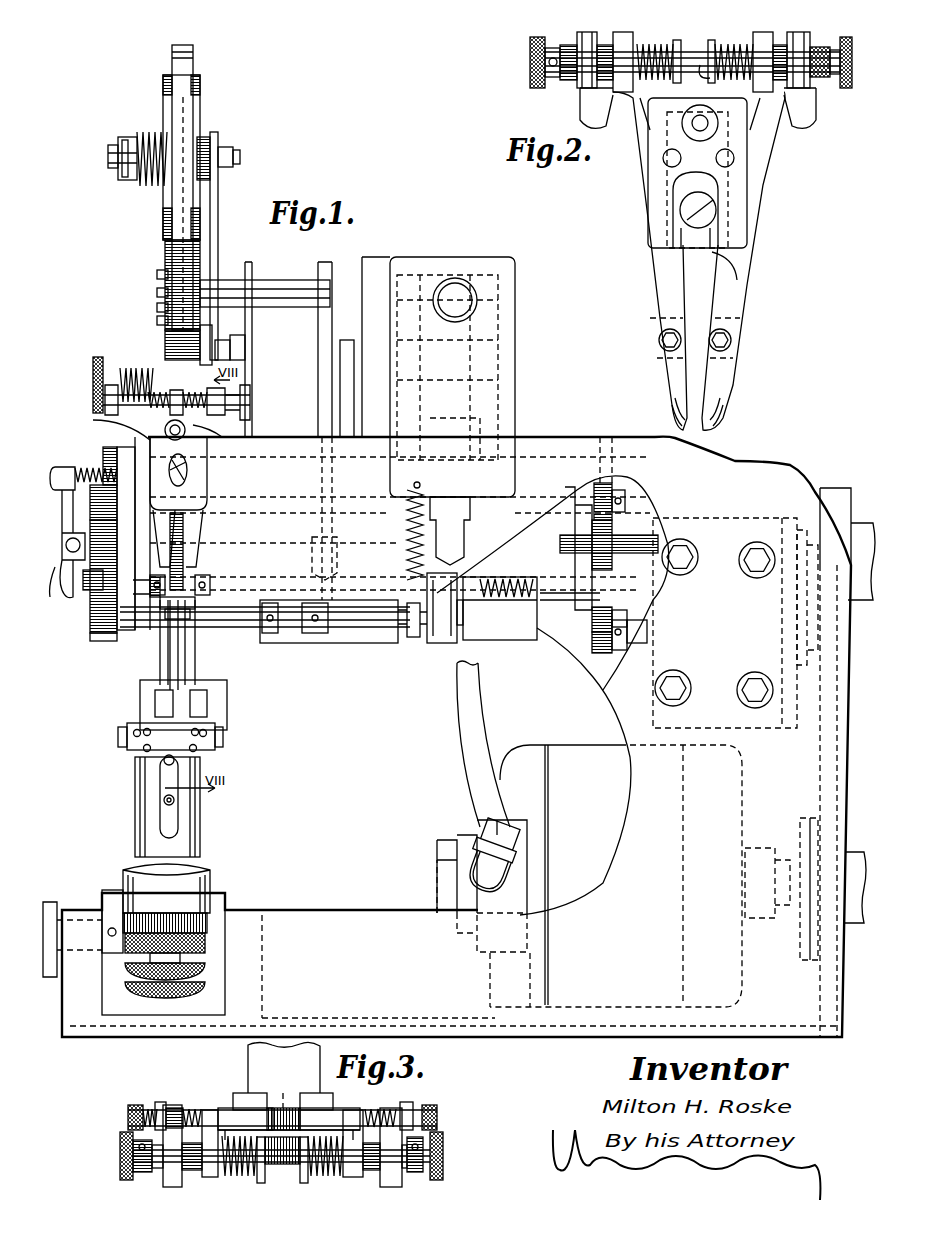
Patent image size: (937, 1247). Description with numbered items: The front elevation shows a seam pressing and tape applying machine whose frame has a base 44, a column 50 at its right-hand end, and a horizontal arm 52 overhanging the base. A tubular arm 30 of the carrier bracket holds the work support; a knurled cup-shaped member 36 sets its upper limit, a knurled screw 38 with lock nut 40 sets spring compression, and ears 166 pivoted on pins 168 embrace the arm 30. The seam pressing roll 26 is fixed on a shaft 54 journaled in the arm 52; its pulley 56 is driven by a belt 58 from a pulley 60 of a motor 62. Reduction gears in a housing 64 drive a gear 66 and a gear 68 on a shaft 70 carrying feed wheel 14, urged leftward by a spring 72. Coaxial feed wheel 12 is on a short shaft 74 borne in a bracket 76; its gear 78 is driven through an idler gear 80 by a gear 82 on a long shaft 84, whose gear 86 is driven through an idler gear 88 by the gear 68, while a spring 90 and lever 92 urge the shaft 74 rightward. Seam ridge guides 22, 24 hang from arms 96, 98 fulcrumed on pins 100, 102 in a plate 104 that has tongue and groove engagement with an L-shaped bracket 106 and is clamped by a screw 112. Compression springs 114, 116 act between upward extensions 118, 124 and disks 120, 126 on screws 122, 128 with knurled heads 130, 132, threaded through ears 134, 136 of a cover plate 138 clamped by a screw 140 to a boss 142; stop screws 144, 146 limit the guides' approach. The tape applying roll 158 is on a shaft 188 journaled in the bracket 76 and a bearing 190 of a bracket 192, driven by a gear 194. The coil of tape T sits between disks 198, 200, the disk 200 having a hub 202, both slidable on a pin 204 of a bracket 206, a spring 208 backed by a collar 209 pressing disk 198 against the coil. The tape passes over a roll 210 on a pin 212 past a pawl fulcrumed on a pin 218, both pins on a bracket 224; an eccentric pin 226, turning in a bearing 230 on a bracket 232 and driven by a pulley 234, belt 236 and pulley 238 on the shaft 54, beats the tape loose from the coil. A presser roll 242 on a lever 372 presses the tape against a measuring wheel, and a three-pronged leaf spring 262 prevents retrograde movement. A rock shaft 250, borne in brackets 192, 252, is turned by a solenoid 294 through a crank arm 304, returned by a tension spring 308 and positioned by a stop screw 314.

In FIG. 1, the feed wheel 12 is at (162, 610).
In FIG. 1, the feed wheel 14 is at (195, 568).
In FIG. 2, the seam ridge guide 22 is at (665, 372).
In FIG. 2, the seam ridge guide 24 is at (722, 382).
In FIG. 1, the rubbing or pressing roll 26 is at (188, 545).
In FIG. 1, the tubular arm 30 is at (203, 822).
In FIG. 1, the cup-shaped member 36 is at (210, 940).
In FIG. 1, the screw 38 is at (206, 982).
In FIG. 1, the lock nut 40 is at (208, 960).
In FIG. 1, the base 44 is at (306, 908).
In FIG. 1, the column 50 is at (612, 707).
In FIG. 1, the arm 52 is at (578, 437).
In FIG. 1, the shaft 54 is at (632, 545).
In FIG. 1, the pulley 56 is at (838, 490).
In FIG. 1, the belt 58 is at (808, 748).
In FIG. 1, the pulley 60 is at (816, 838).
In FIG. 1, the motor 62 is at (558, 753).
In FIG. 1, the housing 64 is at (730, 515).
In FIG. 1, the gear 66 is at (592, 642).
In FIG. 1, the gear 68 is at (600, 615).
In FIG. 1, the shaft 70 is at (585, 597).
In FIG. 1, the spring 72 is at (508, 560).
In FIG. 1, the short shaft 74 is at (150, 600).
In FIG. 1, the bracket 76 is at (118, 448).
In FIG. 1, the gear 78 is at (100, 600).
In FIG. 1, the idler gear 80 is at (110, 545).
In FIG. 1, the gear 82 is at (100, 500).
In FIG. 1, the long shaft 84 is at (273, 495).
In FIG. 1, the gear 86 is at (603, 485).
In FIG. 1, the idler gear 88 is at (613, 530).
In FIG. 1, the spring 90 is at (92, 468).
In FIG. 1, the lever 92 is at (65, 592).
In FIG. 2, the depending arm 96 is at (655, 268).
In FIG. 3, the depending arm 96 is at (236, 1126).
In FIG. 2, the depending arm 98 is at (728, 300).
In FIG. 3, the depending arm 98 is at (336, 1118).
In FIG. 2, the pin 100 is at (668, 165).
In FIG. 2, the pin 102 is at (730, 160).
In FIG. 2, the plate 104 is at (742, 100).
In FIG. 3, the plate 104 is at (242, 1095).
In FIG. 2, the L-shaped bracket 106 is at (737, 280).
In FIG. 3, the L-shaped bracket 106 is at (250, 1052).
In FIG. 2, the clamping screw 112 is at (716, 212).
In FIG. 2, the compression spring 114 is at (642, 50).
In FIG. 3, the compression spring 114 is at (245, 1178).
In FIG. 2, the compression spring 116 is at (725, 48).
In FIG. 3, the compression spring 116 is at (318, 1180).
In FIG. 2, the upward extension 118 is at (625, 40).
In FIG. 3, the upward extension 118 is at (210, 1178).
In FIG. 2, the disk 120 is at (678, 48).
In FIG. 3, the disk 120 is at (260, 1185).
In FIG. 2, the screw 122 is at (605, 45).
In FIG. 3, the screw 122 is at (145, 1172).
In FIG. 2, the upward extension 124 is at (765, 45).
In FIG. 3, the upward extension 124 is at (358, 1180).
In FIG. 2, the disk 126 is at (695, 63).
In FIG. 2, the screw 128 is at (790, 52).
In FIG. 3, the screw 128 is at (425, 1188).
In FIG. 2, the knurled head 130 is at (535, 60).
In FIG. 3, the knurled head 130 is at (120, 1157).
In FIG. 2, the knurled head 132 is at (850, 60).
In FIG. 3, the knurled head 132 is at (443, 1160).
In FIG. 2, the ear 134 is at (585, 48).
In FIG. 3, the ear 134 is at (170, 1187).
In FIG. 2, the ear 136 is at (816, 50).
In FIG. 3, the ear 136 is at (402, 1188).
In FIG. 1, the cover plate 138 is at (192, 493).
In FIG. 3, the cover plate 138 is at (230, 1115).
In FIG. 1, the screw 140 is at (185, 433).
In FIG. 2, the screw 140 is at (695, 128).
In FIG. 3, the screw 140 is at (282, 1165).
In FIG. 3, the boss 142 is at (283, 1108).
In FIG. 3, the stop screw 144 is at (130, 1120).
In FIG. 3, the stop screw 146 is at (437, 1118).
In FIG. 1, the tape applying roll 158 is at (168, 612).
In FIG. 1, the ears 166 is at (145, 705).
In FIG. 1, the coaxial pins 168 is at (128, 743).
In FIG. 1, the shaft 188 is at (200, 617).
In FIG. 1, the bearing 190 is at (255, 632).
In FIG. 1, the bracket 192 is at (300, 632).
In FIG. 1, the gear 194 is at (112, 633).
In FIG. 1, the disk 198 is at (167, 103).
In FIG. 1, the disk 200 is at (195, 95).
In FIG. 1, the hub 202 is at (190, 120).
In FIG. 1, the horizontal pin 204 is at (235, 150).
In FIG. 1, the bracket 206 is at (220, 187).
In FIG. 1, the compression spring 208 is at (150, 185).
In FIG. 1, the collar 209 is at (135, 137).
In FIG. 1, the roll 210 is at (160, 308).
In FIG. 1, the pin 212 is at (160, 320).
In FIG. 1, the pin 218 is at (165, 272).
In FIG. 1, the bracket 224 is at (212, 333).
In FIG. 1, the eccentric pin 226 is at (160, 292).
In FIG. 1, the bearing 230 is at (270, 285).
In FIG. 1, the bracket 232 is at (252, 373).
In FIG. 1, the pulley 234 is at (335, 262).
In FIG. 1, the belt 236 is at (340, 378).
In FIG. 1, the pulley 238 is at (337, 542).
In FIG. 1, the presser roll 242 is at (168, 345).
In FIG. 1, the rock shaft 250 is at (378, 625).
In FIG. 1, the bracket 252 is at (487, 645).
In FIG. 1, the leaf spring 262 is at (197, 607).
In FIG. 1, the solenoid 294 is at (498, 322).
In FIG. 1, the crank arm 304 is at (440, 643).
In FIG. 1, the tension spring 308 is at (408, 530).
In FIG. 1, the stop screw 314 is at (393, 640).
In FIG. 1, the lever 372 is at (245, 363).
In FIG. 1, the tape T is at (180, 280).